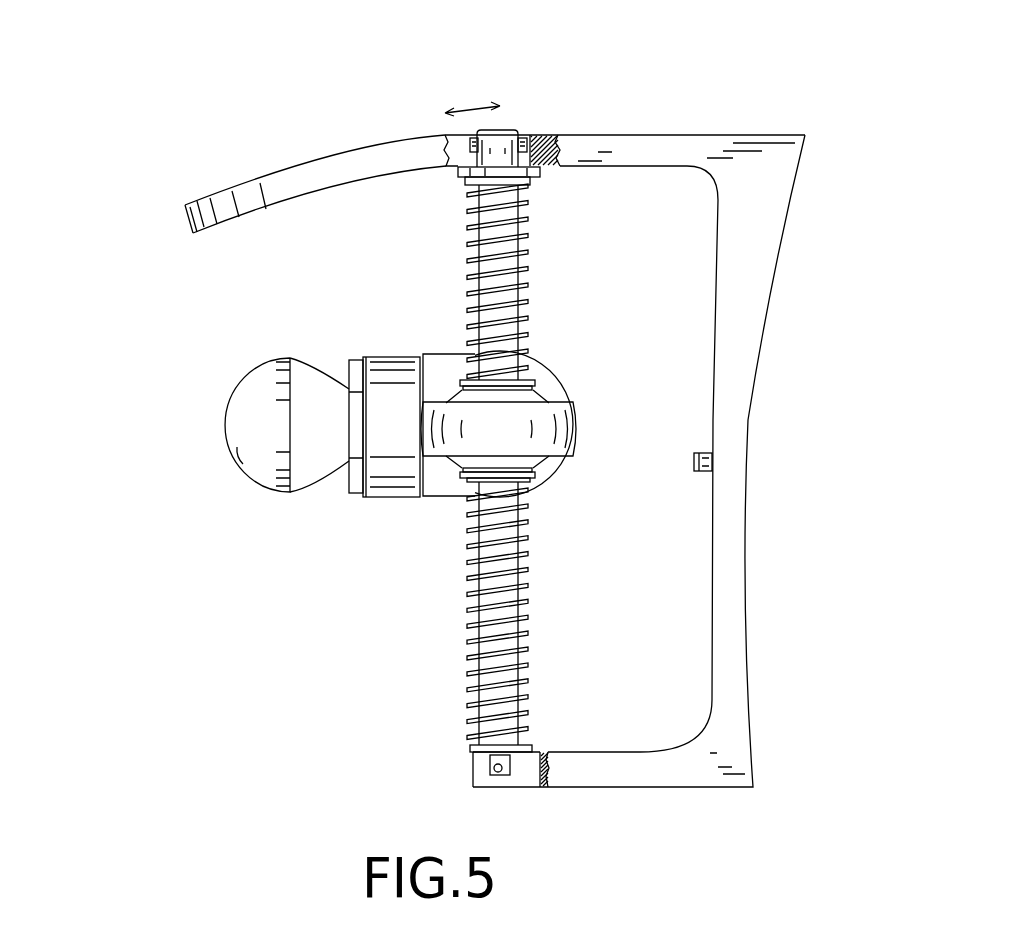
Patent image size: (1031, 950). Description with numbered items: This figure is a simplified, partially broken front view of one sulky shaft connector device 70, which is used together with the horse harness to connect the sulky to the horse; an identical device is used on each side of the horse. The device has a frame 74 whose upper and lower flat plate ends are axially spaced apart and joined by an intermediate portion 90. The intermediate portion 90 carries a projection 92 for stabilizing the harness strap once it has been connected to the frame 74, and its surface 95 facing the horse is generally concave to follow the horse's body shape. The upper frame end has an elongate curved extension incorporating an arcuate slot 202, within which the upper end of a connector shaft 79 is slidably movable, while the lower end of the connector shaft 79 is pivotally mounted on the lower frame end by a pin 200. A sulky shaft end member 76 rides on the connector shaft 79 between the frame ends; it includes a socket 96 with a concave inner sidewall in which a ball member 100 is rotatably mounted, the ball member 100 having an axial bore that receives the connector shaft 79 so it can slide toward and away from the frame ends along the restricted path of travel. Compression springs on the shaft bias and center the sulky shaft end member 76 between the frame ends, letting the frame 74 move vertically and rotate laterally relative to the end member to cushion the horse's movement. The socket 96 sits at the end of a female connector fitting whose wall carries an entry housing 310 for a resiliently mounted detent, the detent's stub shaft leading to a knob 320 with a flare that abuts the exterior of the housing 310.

The sulky shaft connector device 70 is at (728, 403).
The frame 74 is at (734, 108).
The sulky shaft end member 76 is at (575, 408).
The connector shaft 79 is at (490, 725).
The intermediate portion 90 is at (740, 381).
The projection 92 is at (693, 462).
The surface 95 is at (744, 506).
The socket 96 is at (577, 432).
The ball member 100 is at (550, 406).
The pin 200 is at (490, 768).
The arcuate slot 202 is at (457, 170).
The entry housing 310 is at (388, 474).
The knob 320 is at (243, 425).